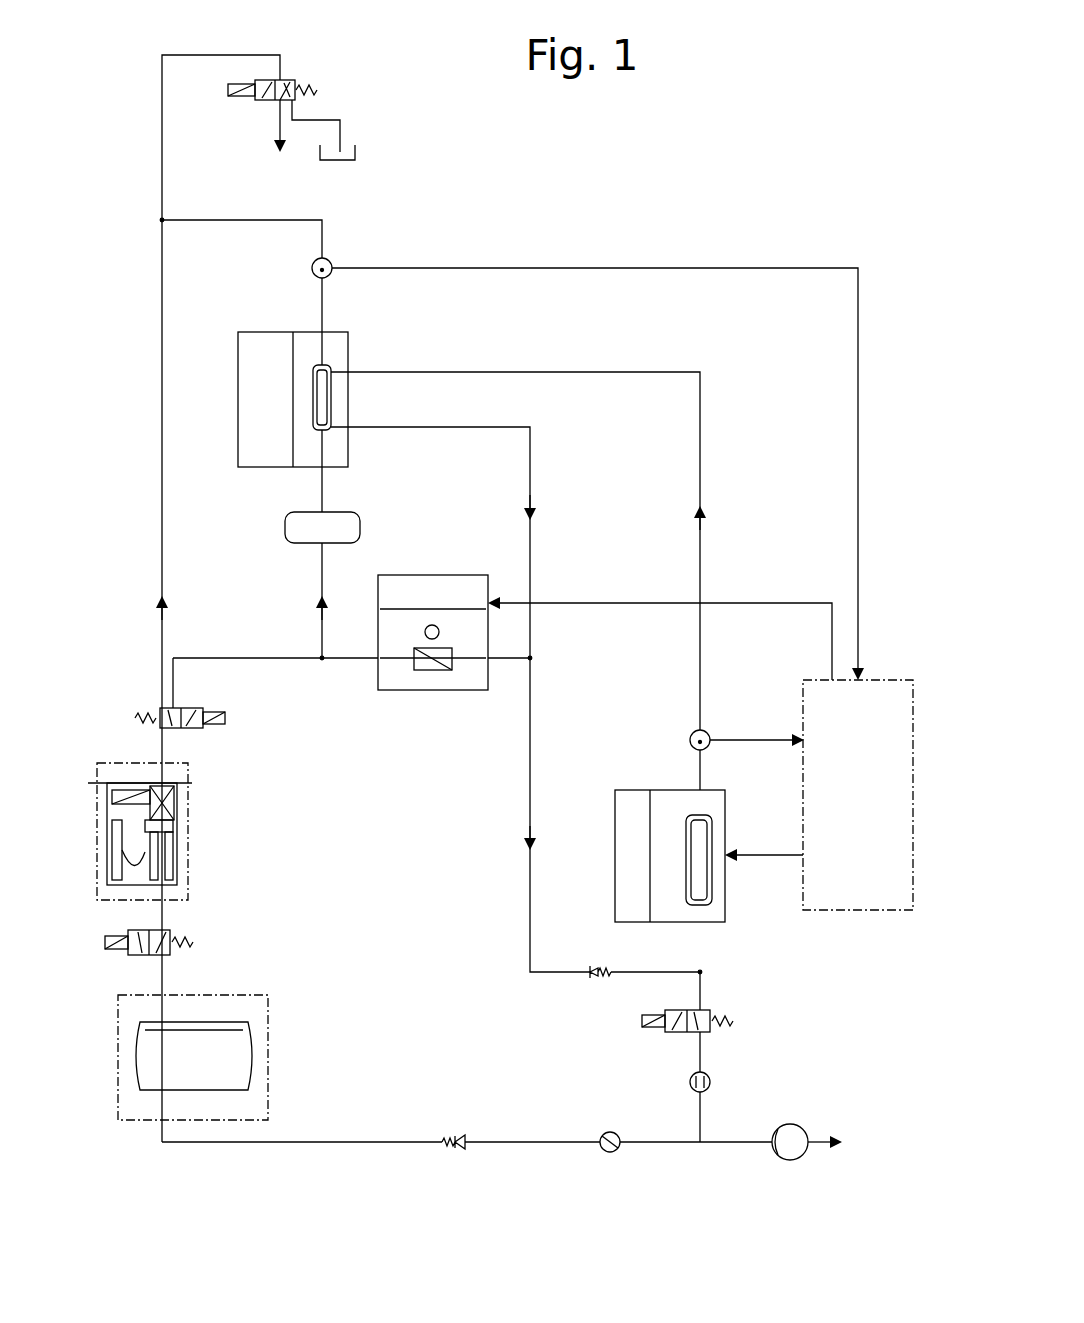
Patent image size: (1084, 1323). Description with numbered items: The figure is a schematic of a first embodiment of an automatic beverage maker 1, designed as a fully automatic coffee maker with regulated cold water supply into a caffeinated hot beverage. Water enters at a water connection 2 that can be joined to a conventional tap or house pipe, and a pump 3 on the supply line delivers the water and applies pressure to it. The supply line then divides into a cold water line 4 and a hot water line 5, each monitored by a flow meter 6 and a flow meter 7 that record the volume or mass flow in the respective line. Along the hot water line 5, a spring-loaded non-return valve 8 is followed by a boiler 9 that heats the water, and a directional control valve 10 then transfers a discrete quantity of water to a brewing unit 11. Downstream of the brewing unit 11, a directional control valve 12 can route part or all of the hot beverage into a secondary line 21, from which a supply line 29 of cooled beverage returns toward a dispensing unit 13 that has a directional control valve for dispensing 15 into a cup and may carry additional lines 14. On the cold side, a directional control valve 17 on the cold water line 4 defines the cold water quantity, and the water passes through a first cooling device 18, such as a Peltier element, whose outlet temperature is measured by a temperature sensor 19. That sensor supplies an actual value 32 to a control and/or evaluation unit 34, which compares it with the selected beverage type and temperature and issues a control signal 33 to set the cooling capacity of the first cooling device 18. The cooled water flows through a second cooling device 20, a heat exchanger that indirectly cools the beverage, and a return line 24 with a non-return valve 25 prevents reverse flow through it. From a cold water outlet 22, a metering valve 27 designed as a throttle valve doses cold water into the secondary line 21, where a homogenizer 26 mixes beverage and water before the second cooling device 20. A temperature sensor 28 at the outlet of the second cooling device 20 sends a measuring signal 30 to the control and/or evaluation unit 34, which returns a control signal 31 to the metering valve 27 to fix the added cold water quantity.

The automatic beverage maker 1 is at (866, 474).
The water connection 2 is at (840, 1140).
The pump 3 is at (803, 1158).
The cold water line 4 is at (700, 462).
The hot water line 5 is at (655, 1146).
The flow meter 6 is at (691, 1076).
The flow meter 7 is at (605, 1151).
The non-return valve 8 is at (462, 1137).
The boiler 9 is at (268, 1107).
The directional control valve 10 is at (170, 930).
The brewing unit 11 is at (188, 838).
The directional control valve 12 is at (160, 708).
The dispensing unit 13 is at (292, 80).
The additional line 14 is at (358, 155).
The dispensing 15 is at (274, 151).
The directional control valve 17 is at (712, 1010).
The first cooling device 18 is at (725, 905).
The temperature sensor 19 is at (704, 732).
The second cooling device 20 is at (348, 455).
The secondary line 21 is at (286, 656).
The cold water outlet 22 is at (538, 475).
The return line 24 is at (538, 857).
The non-return valve 25 is at (590, 966).
The homogenizer 26 is at (360, 522).
The metering valve 27 is at (395, 690).
The temperature sensor 28 is at (328, 262).
The supply line 29 is at (160, 219).
The measuring signal 30 is at (755, 266).
The control signal 31 is at (618, 601).
The actual value 32 is at (736, 735).
The control signal 33 is at (786, 858).
The control and/or evaluation unit 34 is at (867, 913).